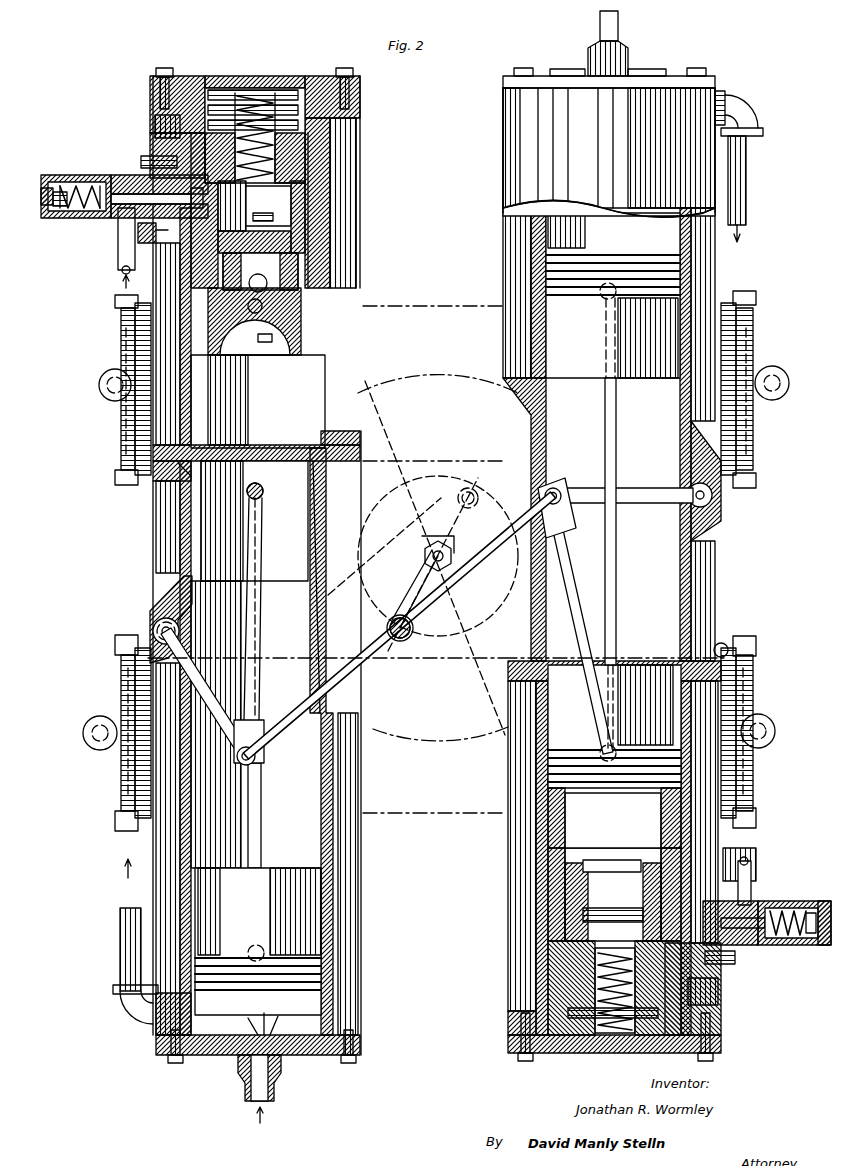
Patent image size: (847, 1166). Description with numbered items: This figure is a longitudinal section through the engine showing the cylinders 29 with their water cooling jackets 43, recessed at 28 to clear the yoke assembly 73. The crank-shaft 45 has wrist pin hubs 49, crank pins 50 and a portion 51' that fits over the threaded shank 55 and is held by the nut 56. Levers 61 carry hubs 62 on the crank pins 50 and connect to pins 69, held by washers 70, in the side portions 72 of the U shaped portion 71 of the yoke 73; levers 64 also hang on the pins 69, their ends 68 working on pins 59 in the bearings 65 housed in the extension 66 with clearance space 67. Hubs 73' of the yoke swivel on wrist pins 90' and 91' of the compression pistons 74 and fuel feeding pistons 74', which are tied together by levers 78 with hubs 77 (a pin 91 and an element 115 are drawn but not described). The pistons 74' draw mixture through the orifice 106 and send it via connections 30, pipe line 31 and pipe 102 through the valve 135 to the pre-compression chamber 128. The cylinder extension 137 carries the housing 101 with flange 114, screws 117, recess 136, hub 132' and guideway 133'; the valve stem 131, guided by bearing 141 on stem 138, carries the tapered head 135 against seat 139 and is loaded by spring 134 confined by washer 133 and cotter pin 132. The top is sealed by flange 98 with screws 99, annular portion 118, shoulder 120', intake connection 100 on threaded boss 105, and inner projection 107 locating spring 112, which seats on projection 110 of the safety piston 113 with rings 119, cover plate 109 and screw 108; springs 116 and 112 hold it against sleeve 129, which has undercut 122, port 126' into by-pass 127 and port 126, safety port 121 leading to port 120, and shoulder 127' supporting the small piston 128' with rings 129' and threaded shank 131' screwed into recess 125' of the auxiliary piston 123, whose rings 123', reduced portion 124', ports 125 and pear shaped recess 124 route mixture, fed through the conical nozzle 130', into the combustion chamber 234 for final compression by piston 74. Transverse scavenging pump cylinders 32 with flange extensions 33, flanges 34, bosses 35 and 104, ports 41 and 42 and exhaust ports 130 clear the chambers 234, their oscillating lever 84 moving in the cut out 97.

The recess 28 is at (536, 402).
The cylinder casting 29 is at (714, 86).
The fuel feed connecting means 30 is at (120, 1003).
The pipe line 31 is at (112, 935).
The pump cylinder 32 is at (120, 333).
The flange extension 33 is at (726, 283).
The flange 34 is at (748, 318).
The boss 35 is at (82, 712).
The port 41 is at (110, 357).
The bent passage 42 is at (196, 447).
The water cooling jacket 43 is at (330, 305).
The crank-shaft 45 is at (412, 533).
The wrist pin hub 49 is at (383, 618).
The crank pin 50 is at (456, 482).
The crank-shaft portion 51' is at (398, 585).
The threaded shank portion 55 is at (410, 578).
The nut 56 is at (436, 544).
The pin 59 is at (704, 487).
The lever 61 is at (466, 553).
The hub 62 is at (392, 634).
The lever 64 is at (186, 660).
The bearing 65 is at (160, 590).
The recessed extension 66 is at (148, 622).
The clearance space 67 is at (170, 595).
The lever end 68 is at (150, 615).
The pin 69 is at (248, 748).
The washer 70 is at (247, 756).
The U shaped portion 71 is at (254, 714).
The side portion 72 is at (235, 760).
The yoke 73 is at (428, 626).
The hub 73' is at (433, 623).
The compression piston 74 is at (441, 500).
The fuel feeding piston 74' is at (258, 925).
The hub 77 is at (240, 944).
The lever 78 is at (609, 412).
The oscillating lever 84 is at (400, 453).
The wrist pin 90' is at (431, 620).
The pin 91 is at (591, 323).
The wrist pin 91' is at (236, 923).
The cut out portion 97 is at (400, 470).
The flange member 98 is at (210, 68).
The screw 99 is at (156, 60).
The intake connection 100 is at (266, 1080).
The valve housing 101 is at (110, 230).
The pipe line 102 is at (110, 250).
The boss 104 is at (92, 380).
The threaded boss 105 is at (274, 1065).
The intake port 106 is at (258, 1026).
The inner projection 107 is at (258, 95).
The screw member 108 is at (192, 70).
The cover plate 109 is at (320, 70).
The projection 110 is at (232, 176).
The spring member 112 is at (278, 84).
The piston 113 is at (355, 186).
The flange portion 114 is at (140, 236).
The spring seat 115 is at (236, 84).
The spring 116 is at (292, 68).
The screw 117 is at (116, 264).
The annular portion 118 is at (312, 116).
The piston ring 119 is at (298, 155).
The safety exhaust port 120 is at (441, 548).
The shoulder portion 120' is at (445, 559).
The safety exhaust port 121 is at (150, 138).
The undercut 122 is at (133, 154).
The auxiliary piston 123 is at (555, 580).
The piston ring 123' is at (485, 560).
The pear shaped recess 124 is at (309, 276).
The reduced portion 124' is at (514, 877).
The port 125 is at (429, 546).
The threaded recess 125' is at (262, 343).
The port opening 126 is at (419, 560).
The port 126' is at (428, 558).
The by-pass 127 is at (424, 534).
The shoulder 127' is at (557, 558).
The pre-compression chamber 128 is at (345, 191).
The small piston 128' is at (464, 574).
The sleeve member 129 is at (433, 550).
The piston ring 129' is at (393, 575).
The exhaust port 130 is at (434, 554).
The nozzle 130' is at (281, 202).
The valve stem 131 is at (436, 546).
The threaded shank extension 131' is at (268, 318).
The cotter pin 132 is at (435, 548).
The inner hub extension 132' is at (55, 171).
The washer 133 is at (441, 576).
The guideway 133' is at (49, 224).
The spring 134 is at (92, 185).
The valve head 135 is at (250, 205).
The recess 136 is at (62, 215).
The extension 137 is at (760, 850).
The stem 138 is at (108, 262).
The seat 139 is at (205, 232).
The bearing 141 is at (100, 167).
The combustion chamber 234 is at (270, 392).